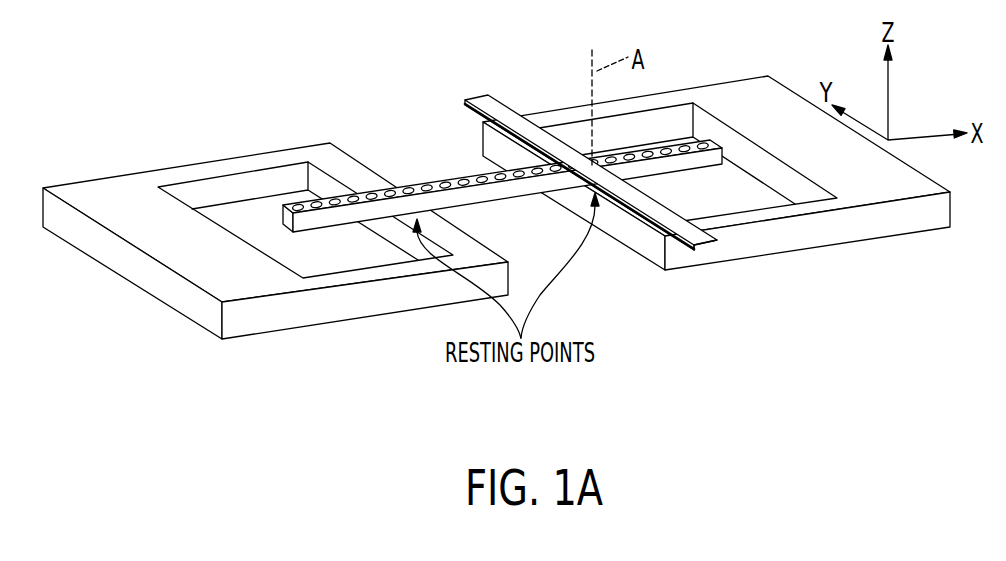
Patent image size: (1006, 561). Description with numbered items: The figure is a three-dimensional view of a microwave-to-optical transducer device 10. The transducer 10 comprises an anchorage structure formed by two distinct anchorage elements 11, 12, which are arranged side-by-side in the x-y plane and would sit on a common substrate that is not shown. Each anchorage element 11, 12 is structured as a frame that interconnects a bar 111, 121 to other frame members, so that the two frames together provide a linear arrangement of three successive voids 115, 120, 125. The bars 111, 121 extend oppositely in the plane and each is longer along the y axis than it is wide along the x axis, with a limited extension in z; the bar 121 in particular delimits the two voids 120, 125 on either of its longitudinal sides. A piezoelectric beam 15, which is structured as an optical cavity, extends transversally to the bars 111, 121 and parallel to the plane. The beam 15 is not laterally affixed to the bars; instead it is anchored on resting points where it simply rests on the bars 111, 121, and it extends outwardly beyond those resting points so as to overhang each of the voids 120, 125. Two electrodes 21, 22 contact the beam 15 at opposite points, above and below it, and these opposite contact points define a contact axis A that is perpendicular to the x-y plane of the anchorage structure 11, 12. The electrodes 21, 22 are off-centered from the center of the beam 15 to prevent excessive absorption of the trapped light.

The microwave-to-optical transducer device 10 is at (496, 229).
The anchorage element 11 is at (275, 230).
The bar 111 is at (341, 150).
The void 115 is at (258, 217).
The anchorage element 12 is at (716, 168).
The bar 121 is at (632, 235).
The void 125 is at (742, 187).
The void 120 is at (413, 168).
The piezoelectric beam 15 is at (523, 183).
The electrode 21 is at (488, 112).
The electrode 22 is at (698, 237).